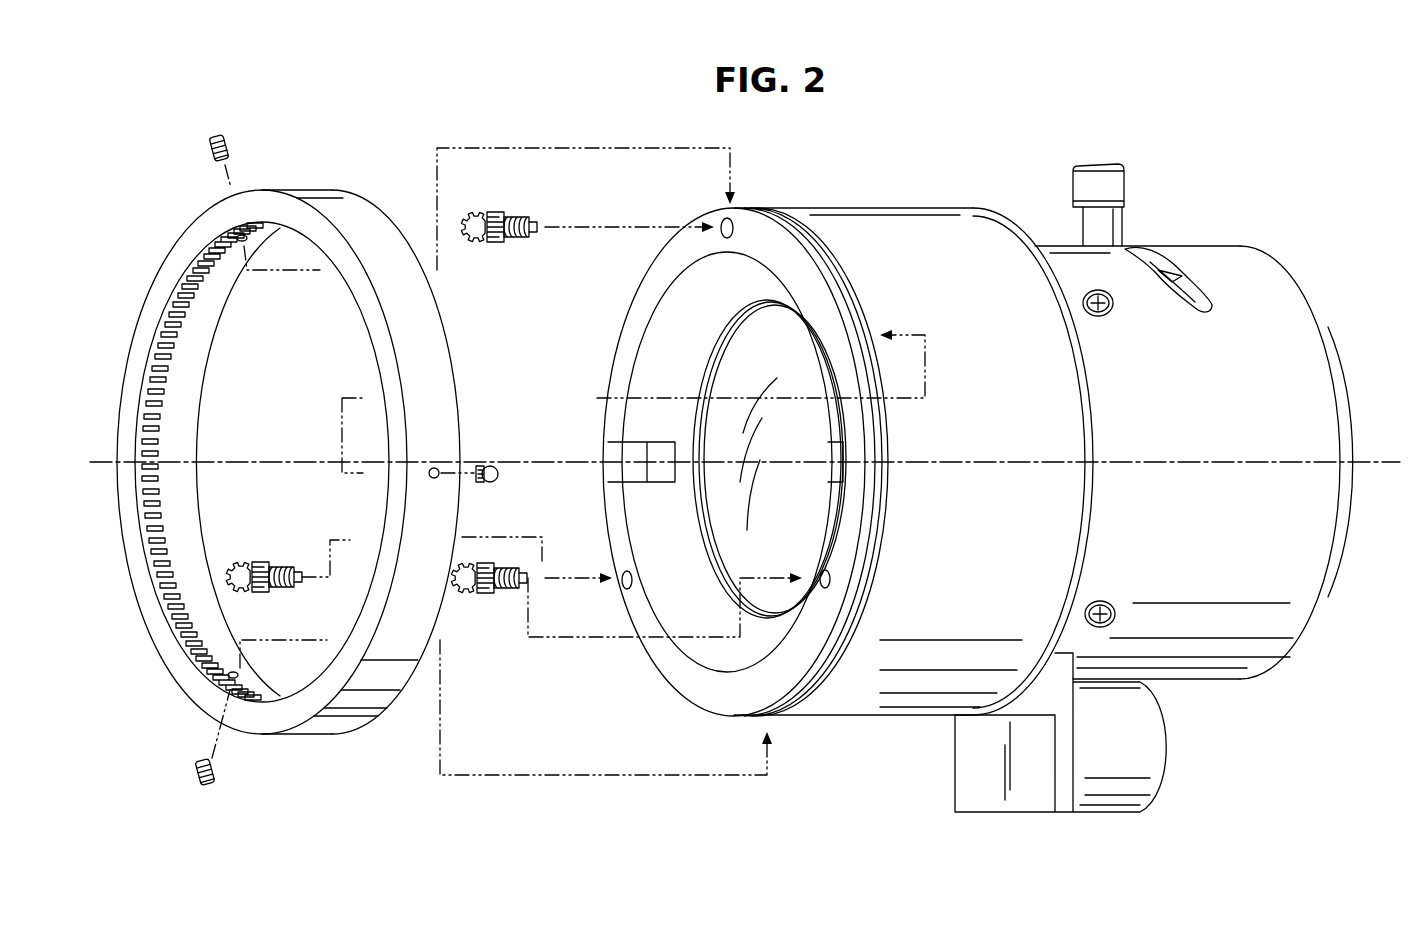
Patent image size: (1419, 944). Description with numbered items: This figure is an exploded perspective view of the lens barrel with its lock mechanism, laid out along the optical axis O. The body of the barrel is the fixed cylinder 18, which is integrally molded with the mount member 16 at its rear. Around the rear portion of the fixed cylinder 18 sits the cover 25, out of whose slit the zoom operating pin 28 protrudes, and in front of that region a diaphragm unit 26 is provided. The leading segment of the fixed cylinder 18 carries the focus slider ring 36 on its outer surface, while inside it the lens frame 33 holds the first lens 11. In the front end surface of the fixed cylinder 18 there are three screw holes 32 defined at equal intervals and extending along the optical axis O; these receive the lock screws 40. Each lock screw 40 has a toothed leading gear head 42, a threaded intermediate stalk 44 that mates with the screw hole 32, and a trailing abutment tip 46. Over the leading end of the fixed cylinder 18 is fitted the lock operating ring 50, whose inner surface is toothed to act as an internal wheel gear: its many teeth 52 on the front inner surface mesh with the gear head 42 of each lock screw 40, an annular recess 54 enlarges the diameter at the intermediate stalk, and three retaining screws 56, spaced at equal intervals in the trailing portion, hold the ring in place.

The optical axis O is at (1373, 456).
The first lens 11 is at (778, 596).
The mount member 16 is at (1340, 546).
The fixed cylinder 18 is at (766, 243).
The cover 25 is at (1238, 645).
The diaphragm unit 26 is at (1153, 745).
The zoom operating pin 28 is at (1105, 185).
The screw holes 32 is at (722, 219).
The lens frame 33 is at (757, 640).
The focus slider ring 36 is at (862, 231).
The lock screws 40 is at (406, 412).
The toothed leading gear head 42 is at (488, 245).
The threaded intermediate stalk 44 is at (514, 217).
The trailing abutment tip 46 is at (539, 222).
The lock operating ring 50 is at (348, 705).
The teeth 52 is at (190, 648).
The annular recess 54 is at (207, 608).
The retaining screws 56 is at (226, 136).